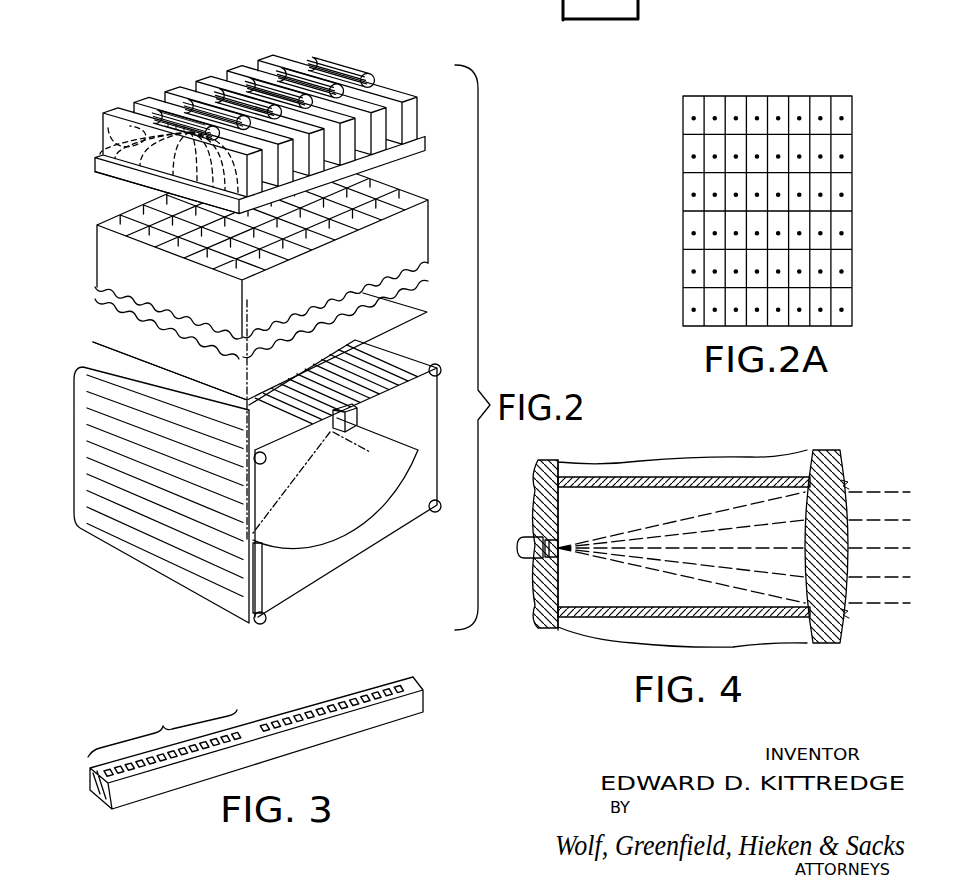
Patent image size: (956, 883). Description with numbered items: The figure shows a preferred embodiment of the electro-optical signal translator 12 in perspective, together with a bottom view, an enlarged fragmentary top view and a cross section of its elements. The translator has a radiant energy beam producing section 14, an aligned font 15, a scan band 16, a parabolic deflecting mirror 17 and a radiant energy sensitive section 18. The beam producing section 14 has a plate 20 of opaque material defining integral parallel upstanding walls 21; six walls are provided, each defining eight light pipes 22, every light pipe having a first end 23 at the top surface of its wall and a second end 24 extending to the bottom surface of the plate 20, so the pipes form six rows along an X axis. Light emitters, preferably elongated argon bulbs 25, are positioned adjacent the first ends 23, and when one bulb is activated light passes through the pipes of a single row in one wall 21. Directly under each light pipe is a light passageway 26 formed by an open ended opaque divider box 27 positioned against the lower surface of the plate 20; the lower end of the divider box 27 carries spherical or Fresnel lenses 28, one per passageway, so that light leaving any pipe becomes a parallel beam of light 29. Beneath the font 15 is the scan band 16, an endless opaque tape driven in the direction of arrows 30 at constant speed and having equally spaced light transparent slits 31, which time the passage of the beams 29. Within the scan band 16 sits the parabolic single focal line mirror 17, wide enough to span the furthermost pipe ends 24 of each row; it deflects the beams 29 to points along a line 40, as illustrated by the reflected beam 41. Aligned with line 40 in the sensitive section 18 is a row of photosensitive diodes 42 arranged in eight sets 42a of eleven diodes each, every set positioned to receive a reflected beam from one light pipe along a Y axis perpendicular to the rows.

In FIG. 2, the electro-optical signal translator 12 is at (70, 334).
In FIG. 2, the radiant energy beam producing section 14 is at (250, 254).
In FIG. 2, the aligned font 15 is at (300, 367).
In FIG. 2, the scan band 16 is at (443, 382).
In FIG. 2, the parabolic deflecting mirror 17 is at (378, 520).
In FIG. 2, the radiant energy sensitive section 18 is at (333, 435).
In FIG. 3, the radiant energy sensitive section 18 is at (408, 705).
In FIG. 2, the plate 20 is at (427, 144).
In FIG. 2A, the plate 20 is at (757, 97).
In FIG. 4, the plate 20 is at (560, 463).
In FIG. 2, the upstanding walls 21 is at (240, 75).
In FIG. 2, the light pipes 22 is at (100, 136).
In FIG. 4, the light pipes 22 is at (525, 559).
In FIG. 2, the first end 23 is at (162, 120).
In FIG. 2, the second end 24 is at (100, 178).
In FIG. 2A, the second end 24 is at (690, 157).
In FIG. 2, the elongated argon bulbs 25 is at (318, 72).
In FIG. 2, the light passageway 26 is at (405, 200).
In FIG. 4, the light passageway 26 is at (633, 508).
In FIG. 2, the divider box 27 is at (402, 246).
In FIG. 4, the divider box 27 is at (730, 456).
In FIG. 2, the lenses 28 is at (375, 306).
In FIG. 4, the lenses 28 is at (855, 525).
In FIG. 4, the parallel beam of light 29 is at (877, 605).
In FIG. 2, the arrows 30 is at (250, 482).
In FIG. 2, the light transparent slits 31 is at (88, 400).
In FIG. 2, the line 40 is at (367, 452).
In FIG. 2, the reflected beam 41 is at (280, 493).
In FIG. 3, the photosensitive diodes 42 is at (285, 698).
In FIG. 3, the sets of photodiodes 42a is at (162, 727).